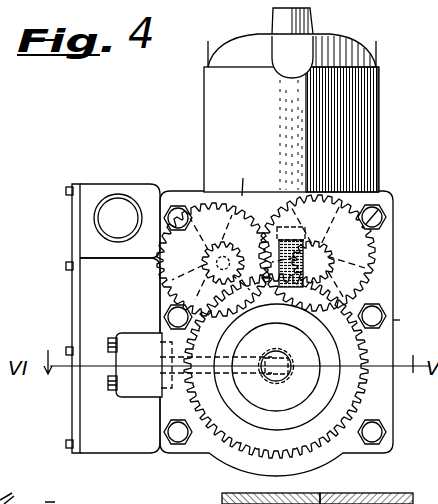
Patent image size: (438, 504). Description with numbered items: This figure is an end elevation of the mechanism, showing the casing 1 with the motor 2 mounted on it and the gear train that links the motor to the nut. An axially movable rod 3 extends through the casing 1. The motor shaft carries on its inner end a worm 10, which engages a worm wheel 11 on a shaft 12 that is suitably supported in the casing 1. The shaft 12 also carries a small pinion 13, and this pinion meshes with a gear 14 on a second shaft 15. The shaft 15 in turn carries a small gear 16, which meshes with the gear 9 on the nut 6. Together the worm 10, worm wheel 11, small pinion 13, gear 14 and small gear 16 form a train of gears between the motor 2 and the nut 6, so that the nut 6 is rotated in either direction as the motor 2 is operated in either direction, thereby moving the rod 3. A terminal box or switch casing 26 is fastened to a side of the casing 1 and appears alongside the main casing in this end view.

The casing 1 is at (393, 291).
The motor 2 is at (362, 104).
The axially movable rod 3 is at (412, 325).
The nut 6 is at (372, 501).
The gear 9 is at (385, 393).
The worm 10 is at (380, 262).
The worm wheel 11 is at (208, 205).
The shaft 12 is at (244, 174).
The small pinion 13 is at (204, 270).
The gear 14 is at (318, 218).
The shaft 15 is at (383, 214).
The small gear 16 is at (376, 184).
The terminal box or switch casing 26 is at (90, 276).